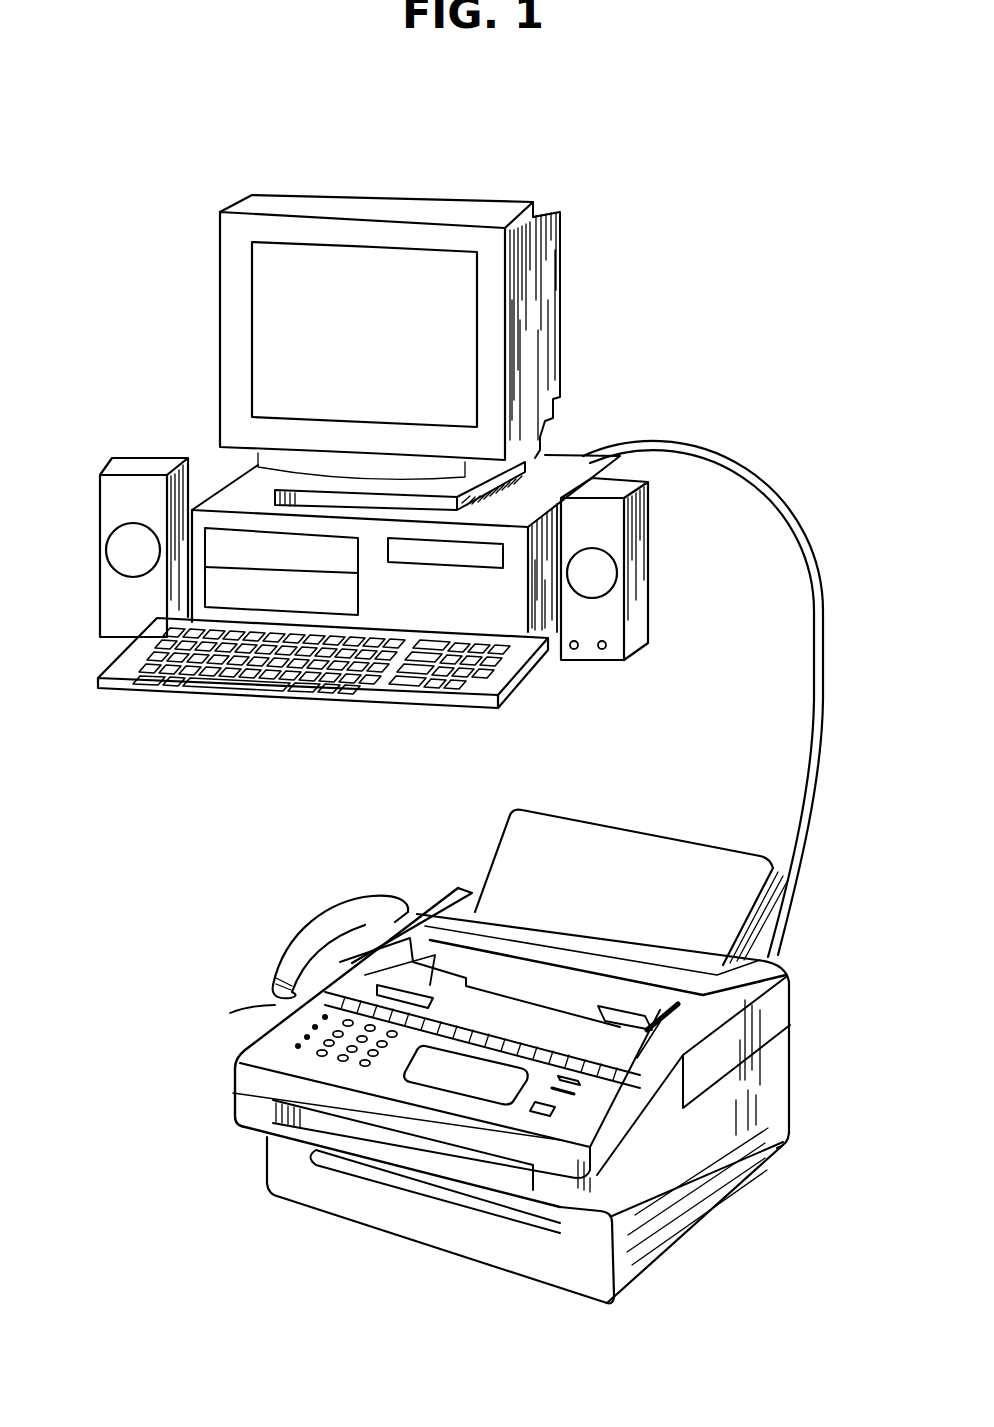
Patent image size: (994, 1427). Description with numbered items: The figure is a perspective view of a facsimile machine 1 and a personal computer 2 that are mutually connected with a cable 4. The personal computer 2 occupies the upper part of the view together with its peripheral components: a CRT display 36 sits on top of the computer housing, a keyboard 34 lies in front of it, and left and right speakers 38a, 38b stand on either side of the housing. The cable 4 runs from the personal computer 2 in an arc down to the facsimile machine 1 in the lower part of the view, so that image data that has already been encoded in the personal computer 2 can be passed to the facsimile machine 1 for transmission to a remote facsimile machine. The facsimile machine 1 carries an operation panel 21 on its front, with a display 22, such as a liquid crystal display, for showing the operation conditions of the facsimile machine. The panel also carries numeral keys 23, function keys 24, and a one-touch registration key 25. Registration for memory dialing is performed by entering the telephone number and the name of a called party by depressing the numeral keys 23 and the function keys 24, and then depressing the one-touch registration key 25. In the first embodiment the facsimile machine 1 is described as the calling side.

The facsimile machine 1 is at (528, 1057).
The personal computer 2 is at (572, 459).
The cable 4 is at (808, 592).
The main body / operation panel 21 is at (281, 1058).
The display 22 is at (485, 1092).
The numeral keys 23 is at (378, 1055).
The function keys 24 is at (570, 1076).
The one-touch registration key 25 is at (310, 1012).
The keyboard 34 is at (277, 680).
The CRT display 36 is at (436, 233).
The left speaker 38a is at (140, 472).
The right speaker 38b is at (640, 568).